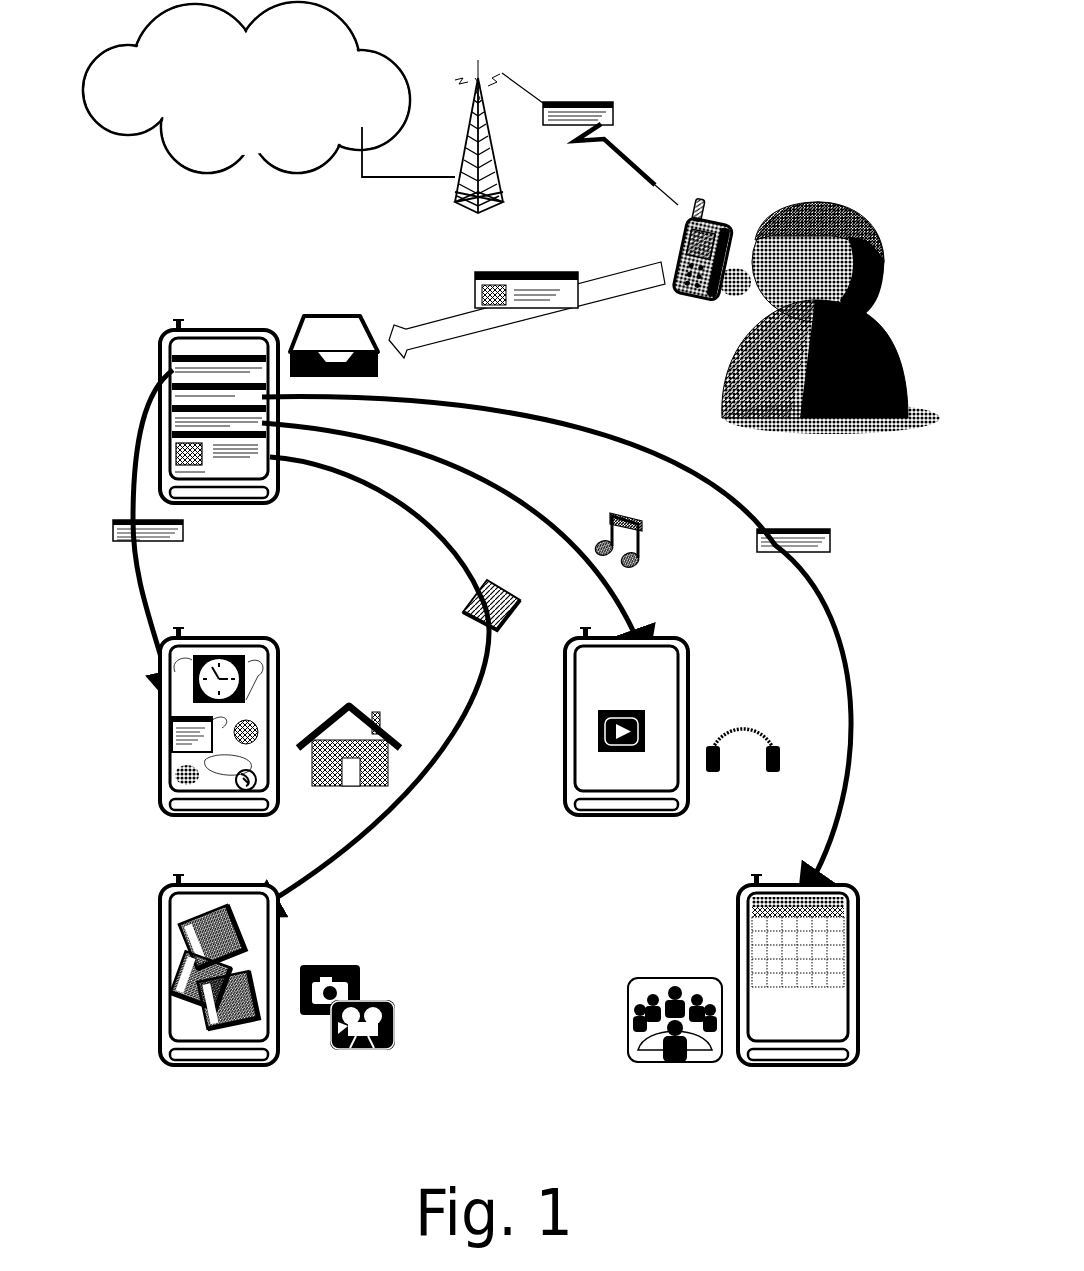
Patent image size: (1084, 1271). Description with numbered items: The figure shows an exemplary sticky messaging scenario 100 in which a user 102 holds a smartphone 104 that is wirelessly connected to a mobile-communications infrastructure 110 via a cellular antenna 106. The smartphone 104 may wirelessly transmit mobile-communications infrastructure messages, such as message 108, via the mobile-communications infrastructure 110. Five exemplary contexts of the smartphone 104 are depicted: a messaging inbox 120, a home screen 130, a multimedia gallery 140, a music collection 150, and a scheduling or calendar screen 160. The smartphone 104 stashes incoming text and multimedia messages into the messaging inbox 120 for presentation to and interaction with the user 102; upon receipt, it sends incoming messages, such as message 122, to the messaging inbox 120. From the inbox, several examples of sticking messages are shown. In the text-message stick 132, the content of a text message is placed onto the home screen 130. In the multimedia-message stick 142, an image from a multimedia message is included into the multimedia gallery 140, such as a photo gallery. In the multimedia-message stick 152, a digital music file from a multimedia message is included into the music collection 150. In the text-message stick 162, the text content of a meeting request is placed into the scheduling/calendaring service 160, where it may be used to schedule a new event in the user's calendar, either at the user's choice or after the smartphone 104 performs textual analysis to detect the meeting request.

The sticky messaging scenario 100 is at (752, 47).
The user 102 is at (810, 200).
The smartphone 104 is at (703, 236).
The cellular antenna 106 is at (455, 203).
The message 108 is at (585, 102).
The mobile-communications infrastructure 110 is at (228, 120).
The messaging inbox 120 is at (197, 308).
The message 122 is at (540, 300).
The home screen 130 is at (342, 696).
The text-message stick 132 is at (185, 534).
The multimedia gallery 140 is at (369, 968).
The multimedia-message stick 142 is at (465, 606).
The music collection 150 is at (719, 698).
The multimedia-message stick 152 is at (621, 514).
The scheduling or calendar screen 160 is at (638, 954).
The text-message stick 162 is at (785, 532).